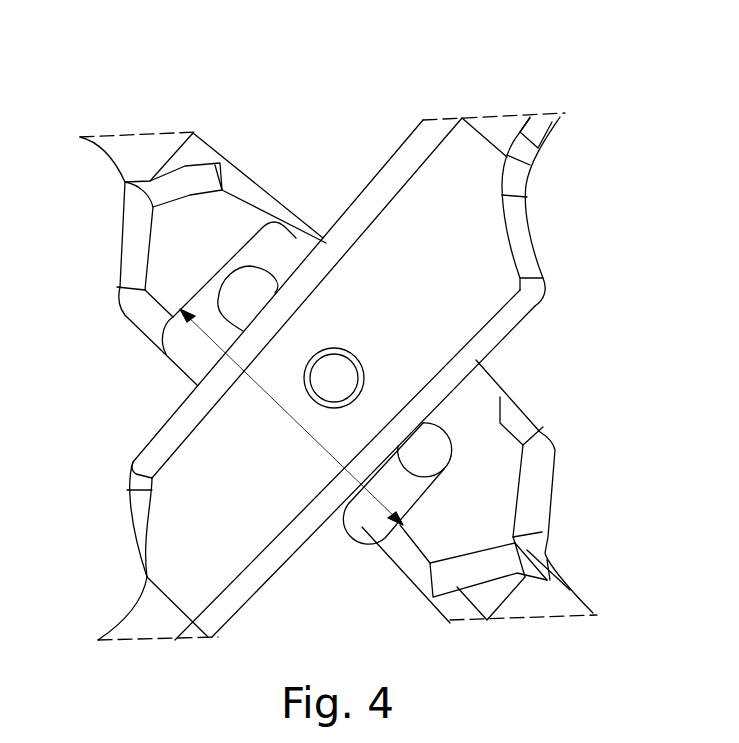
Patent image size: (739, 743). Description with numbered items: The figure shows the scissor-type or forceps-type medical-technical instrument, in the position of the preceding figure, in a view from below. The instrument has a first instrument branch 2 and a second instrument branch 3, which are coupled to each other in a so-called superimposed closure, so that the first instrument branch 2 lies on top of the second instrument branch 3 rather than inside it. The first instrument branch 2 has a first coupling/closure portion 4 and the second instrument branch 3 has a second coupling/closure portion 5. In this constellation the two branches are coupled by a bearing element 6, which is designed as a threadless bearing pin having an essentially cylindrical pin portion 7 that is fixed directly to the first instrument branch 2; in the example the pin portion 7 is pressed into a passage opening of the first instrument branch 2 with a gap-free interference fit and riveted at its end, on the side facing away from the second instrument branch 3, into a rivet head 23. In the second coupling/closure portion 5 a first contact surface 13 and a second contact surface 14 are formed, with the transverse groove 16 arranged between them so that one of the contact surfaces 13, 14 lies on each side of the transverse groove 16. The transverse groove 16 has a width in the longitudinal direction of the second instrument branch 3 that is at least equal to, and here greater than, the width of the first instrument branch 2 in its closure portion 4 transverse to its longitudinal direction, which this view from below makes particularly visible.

The first instrument branch 2 is at (505, 122).
The second instrument branch 3 is at (527, 603).
The first coupling/closure portion 4 is at (477, 253).
The second coupling/closure portion 5 is at (405, 562).
The bearing element 6 is at (353, 525).
The pin portion 7 is at (342, 374).
The first contact surface 13 is at (203, 246).
The second contact surface 14 is at (491, 509).
The transverse groove 16 is at (480, 399).
The rivet head 23 is at (335, 348).